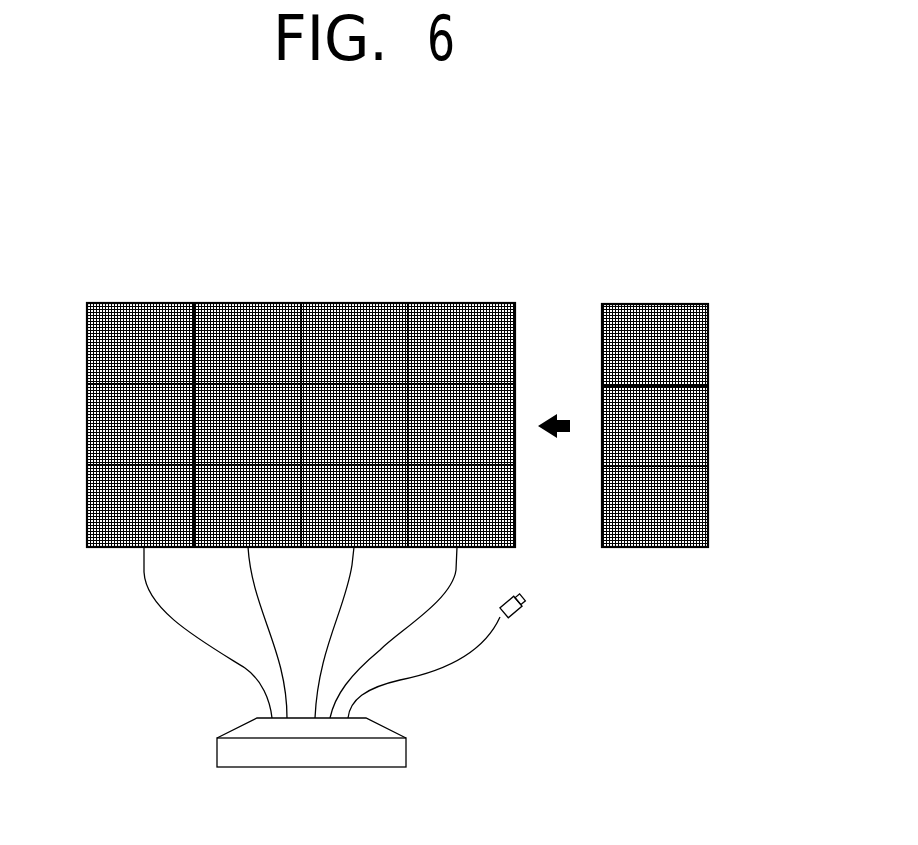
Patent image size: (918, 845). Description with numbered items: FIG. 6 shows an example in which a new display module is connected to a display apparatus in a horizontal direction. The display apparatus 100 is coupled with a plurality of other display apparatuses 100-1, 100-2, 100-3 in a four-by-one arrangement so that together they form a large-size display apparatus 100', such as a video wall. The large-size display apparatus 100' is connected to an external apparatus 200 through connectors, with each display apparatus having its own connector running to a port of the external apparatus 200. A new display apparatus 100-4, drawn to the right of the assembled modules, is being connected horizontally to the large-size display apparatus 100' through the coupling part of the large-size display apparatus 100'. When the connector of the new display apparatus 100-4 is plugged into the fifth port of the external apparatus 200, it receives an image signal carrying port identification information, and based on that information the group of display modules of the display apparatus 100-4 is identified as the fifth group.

The display apparatus 100 is at (140, 395).
The display apparatus 100-1 is at (239, 303).
The display apparatus 100-2 is at (343, 303).
The display apparatus 100-3 is at (447, 303).
The new display apparatus 100-4 is at (642, 304).
The large-size display apparatus 100' is at (337, 381).
The external apparatus 200 is at (403, 757).